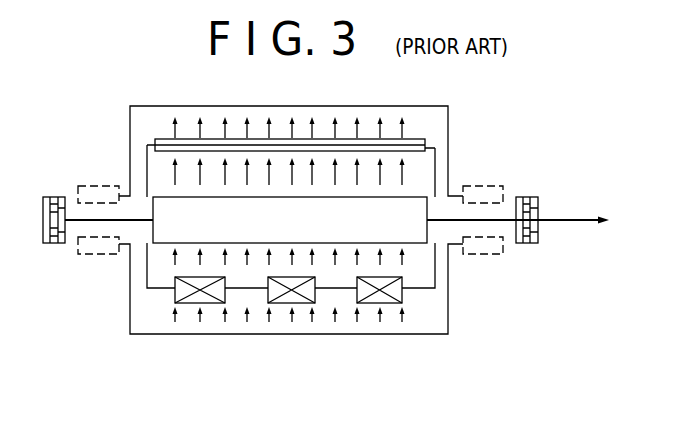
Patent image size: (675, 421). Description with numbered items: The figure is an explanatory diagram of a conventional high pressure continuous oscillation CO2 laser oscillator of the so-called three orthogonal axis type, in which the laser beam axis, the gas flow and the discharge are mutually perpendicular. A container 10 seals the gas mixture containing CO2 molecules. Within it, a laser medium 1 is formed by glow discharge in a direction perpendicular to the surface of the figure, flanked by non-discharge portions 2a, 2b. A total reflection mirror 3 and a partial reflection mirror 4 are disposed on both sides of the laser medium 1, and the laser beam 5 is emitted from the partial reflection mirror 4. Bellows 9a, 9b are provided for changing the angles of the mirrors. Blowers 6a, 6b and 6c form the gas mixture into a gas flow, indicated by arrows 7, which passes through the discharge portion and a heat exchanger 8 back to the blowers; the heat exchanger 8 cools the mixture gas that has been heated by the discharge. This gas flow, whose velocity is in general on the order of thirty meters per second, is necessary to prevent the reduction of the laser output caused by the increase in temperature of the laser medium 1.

The laser medium 1 is at (418, 197).
The non-discharge portion 2a is at (127, 230).
The non-discharge portion 2b is at (512, 228).
The total reflection mirror 3 is at (50, 240).
The partial reflection mirror 4 is at (527, 243).
The laser beam 5 is at (572, 220).
The blower 6a is at (225, 293).
The blower 6b is at (266, 300).
The blower 6c is at (402, 303).
The arrows 7 is at (400, 318).
The heat exchanger 8 is at (425, 142).
The bellows 9a is at (98, 186).
The bellows 9b is at (488, 186).
The container 10 is at (448, 320).